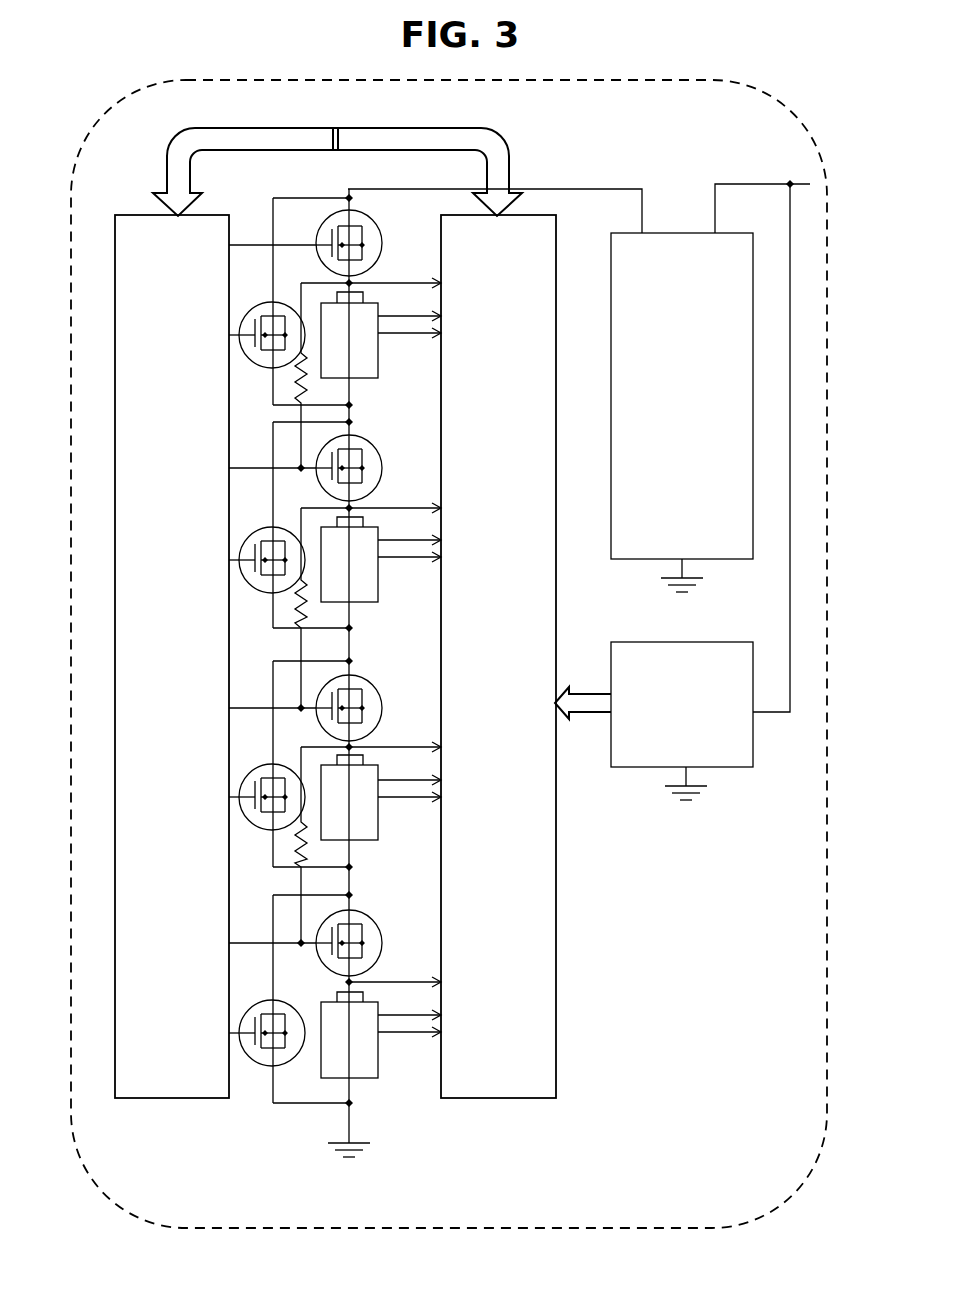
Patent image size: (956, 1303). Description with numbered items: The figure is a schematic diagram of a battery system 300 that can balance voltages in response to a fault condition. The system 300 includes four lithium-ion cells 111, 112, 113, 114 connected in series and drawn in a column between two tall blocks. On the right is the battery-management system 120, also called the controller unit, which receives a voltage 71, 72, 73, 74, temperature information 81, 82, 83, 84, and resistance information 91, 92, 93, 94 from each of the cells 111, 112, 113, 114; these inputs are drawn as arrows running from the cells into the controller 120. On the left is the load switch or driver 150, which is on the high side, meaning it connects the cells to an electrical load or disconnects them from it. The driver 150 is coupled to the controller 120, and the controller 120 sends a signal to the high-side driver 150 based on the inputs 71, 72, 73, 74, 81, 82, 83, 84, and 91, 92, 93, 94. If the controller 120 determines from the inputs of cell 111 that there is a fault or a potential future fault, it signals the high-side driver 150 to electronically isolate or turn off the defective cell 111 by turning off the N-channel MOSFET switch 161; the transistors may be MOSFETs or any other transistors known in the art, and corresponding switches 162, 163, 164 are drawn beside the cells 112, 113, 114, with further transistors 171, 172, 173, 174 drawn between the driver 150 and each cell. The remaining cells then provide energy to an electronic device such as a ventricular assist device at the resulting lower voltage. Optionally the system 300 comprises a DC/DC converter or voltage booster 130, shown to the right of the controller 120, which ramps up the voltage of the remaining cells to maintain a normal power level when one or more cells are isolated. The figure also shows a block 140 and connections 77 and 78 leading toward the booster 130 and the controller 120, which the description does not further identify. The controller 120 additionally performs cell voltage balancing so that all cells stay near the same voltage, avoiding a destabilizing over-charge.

The battery system 300 is at (90, 138).
The load switch or driver 150 is at (172, 656).
The battery-management system 120 is at (498, 656).
The voltage booster 130 is at (682, 412).
The control circuit 140 is at (654, 721).
The supply line 77 is at (563, 187).
The supply line 78 is at (735, 183).
The N-channel MOSFET switch 161 is at (384, 245).
The second switch transistor 162 is at (384, 467).
The third switch transistor 163 is at (384, 706).
The fourth switch transistor 164 is at (384, 942).
The first bypass transistor 171 is at (256, 318).
The second bypass transistor 172 is at (256, 543).
The third bypass transistor 173 is at (256, 771).
The fourth bypass transistor 174 is at (256, 1011).
The lithium-ion cell 111 is at (349, 335).
The lithium-ion cell 112 is at (349, 559).
The lithium-ion cell 113 is at (349, 797).
The lithium-ion cell 114 is at (349, 1035).
The voltage 71 is at (380, 283).
The voltage 72 is at (380, 508).
The voltage 73 is at (380, 747).
The voltage 74 is at (380, 982).
The temperature information 81 is at (393, 316).
The temperature information 82 is at (393, 540).
The temperature information 83 is at (393, 780).
The temperature information 84 is at (393, 1015).
The resistance information 91 is at (387, 333).
The resistance information 92 is at (387, 557).
The resistance information 93 is at (387, 797).
The resistance information 94 is at (387, 1032).